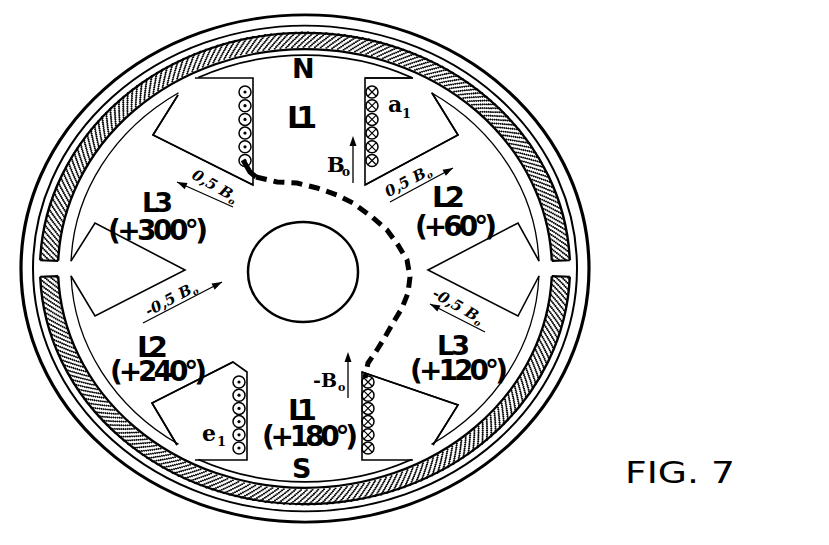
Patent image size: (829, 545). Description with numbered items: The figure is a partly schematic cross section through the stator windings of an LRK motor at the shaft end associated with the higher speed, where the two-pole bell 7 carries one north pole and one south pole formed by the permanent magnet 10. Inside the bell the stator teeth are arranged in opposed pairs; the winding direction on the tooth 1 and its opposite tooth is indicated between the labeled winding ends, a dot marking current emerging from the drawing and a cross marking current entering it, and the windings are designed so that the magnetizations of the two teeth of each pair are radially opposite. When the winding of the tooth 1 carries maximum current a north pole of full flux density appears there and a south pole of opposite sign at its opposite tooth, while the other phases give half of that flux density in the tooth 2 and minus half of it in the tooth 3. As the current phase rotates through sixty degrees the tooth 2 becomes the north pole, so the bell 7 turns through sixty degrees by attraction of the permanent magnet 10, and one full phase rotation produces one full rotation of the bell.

The stator tooth 1 is at (353, 88).
The stator tooth 2 is at (487, 160).
The stator tooth 3 is at (518, 350).
The two-pole bell 7 is at (505, 83).
The permanent magnet 10 is at (452, 78).